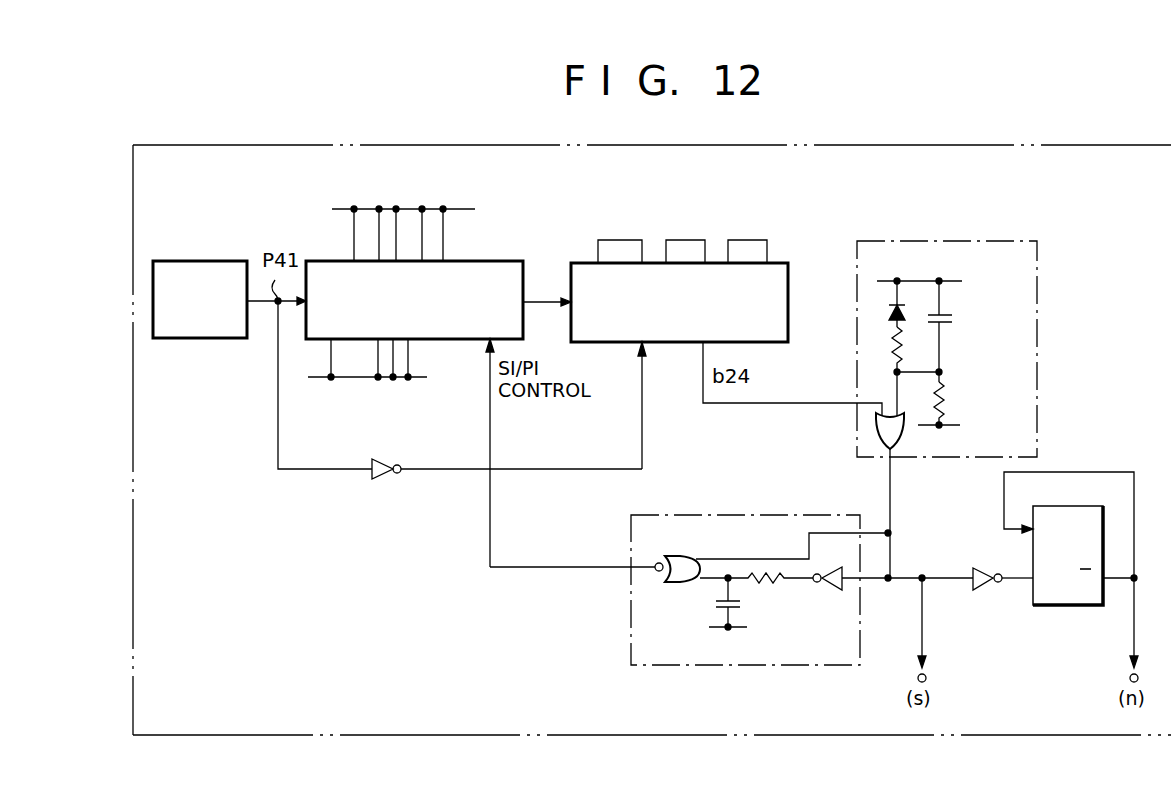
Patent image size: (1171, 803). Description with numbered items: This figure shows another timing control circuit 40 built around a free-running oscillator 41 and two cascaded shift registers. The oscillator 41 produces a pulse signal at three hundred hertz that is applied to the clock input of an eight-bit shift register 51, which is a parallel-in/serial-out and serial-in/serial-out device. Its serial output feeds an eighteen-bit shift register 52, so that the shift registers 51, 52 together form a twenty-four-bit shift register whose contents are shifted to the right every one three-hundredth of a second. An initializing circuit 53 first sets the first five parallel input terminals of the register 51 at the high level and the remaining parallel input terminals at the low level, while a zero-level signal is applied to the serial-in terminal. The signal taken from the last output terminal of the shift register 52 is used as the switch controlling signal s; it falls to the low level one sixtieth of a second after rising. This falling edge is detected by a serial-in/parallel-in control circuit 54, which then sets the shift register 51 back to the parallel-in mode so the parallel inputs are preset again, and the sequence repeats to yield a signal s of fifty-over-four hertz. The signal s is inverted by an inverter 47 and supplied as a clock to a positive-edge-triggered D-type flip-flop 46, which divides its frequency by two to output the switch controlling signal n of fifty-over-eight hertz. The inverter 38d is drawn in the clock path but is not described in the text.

The timing control circuit 40 is at (1064, 146).
The oscillator 41 is at (210, 328).
The shift register 51 is at (468, 341).
The shift register 52 is at (607, 345).
The initializing circuit 53 is at (947, 241).
The serial-in/parallel-in control circuit 54 is at (743, 515).
The inverter 38d is at (383, 475).
The inverter 47 is at (979, 588).
The D-type flip-flop 46 is at (1080, 606).